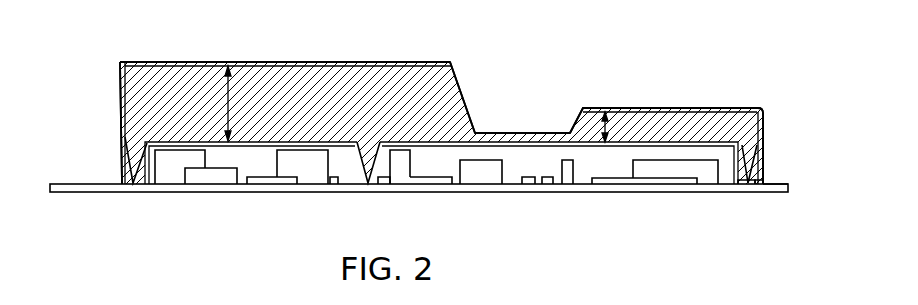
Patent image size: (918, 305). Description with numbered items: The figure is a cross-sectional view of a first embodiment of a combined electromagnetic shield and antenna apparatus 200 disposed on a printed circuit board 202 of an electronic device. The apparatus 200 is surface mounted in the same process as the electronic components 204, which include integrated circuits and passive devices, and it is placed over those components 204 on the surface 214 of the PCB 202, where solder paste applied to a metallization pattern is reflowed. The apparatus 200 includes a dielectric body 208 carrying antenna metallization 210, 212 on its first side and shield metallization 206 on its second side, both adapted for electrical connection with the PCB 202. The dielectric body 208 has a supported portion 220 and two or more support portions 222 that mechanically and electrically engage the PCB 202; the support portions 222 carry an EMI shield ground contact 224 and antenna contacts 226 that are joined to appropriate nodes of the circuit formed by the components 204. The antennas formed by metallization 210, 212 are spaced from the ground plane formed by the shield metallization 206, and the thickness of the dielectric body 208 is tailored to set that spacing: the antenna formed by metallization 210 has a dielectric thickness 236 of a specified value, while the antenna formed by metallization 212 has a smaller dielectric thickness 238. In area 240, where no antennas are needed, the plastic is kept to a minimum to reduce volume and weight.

The combined electromagnetic shield and antenna apparatus 200 is at (576, 50).
The printed circuit board 202 is at (645, 194).
The electronic components 204 is at (682, 173).
The shield metallization 206 is at (268, 144).
The dielectric body 208 is at (366, 85).
The antenna metallization 210 is at (168, 62).
The antenna metallization 212 is at (642, 108).
The surface of the PCB 214 is at (775, 184).
The supported portion 220 is at (464, 97).
The support portions 222 is at (122, 157).
The EMI shield ground contact 224 is at (743, 193).
The antenna contacts 226 is at (762, 193).
The dielectric thickness 236 is at (240, 67).
The dielectric thickness 238 is at (592, 129).
The area where no antennas are needed 240 is at (418, 62).